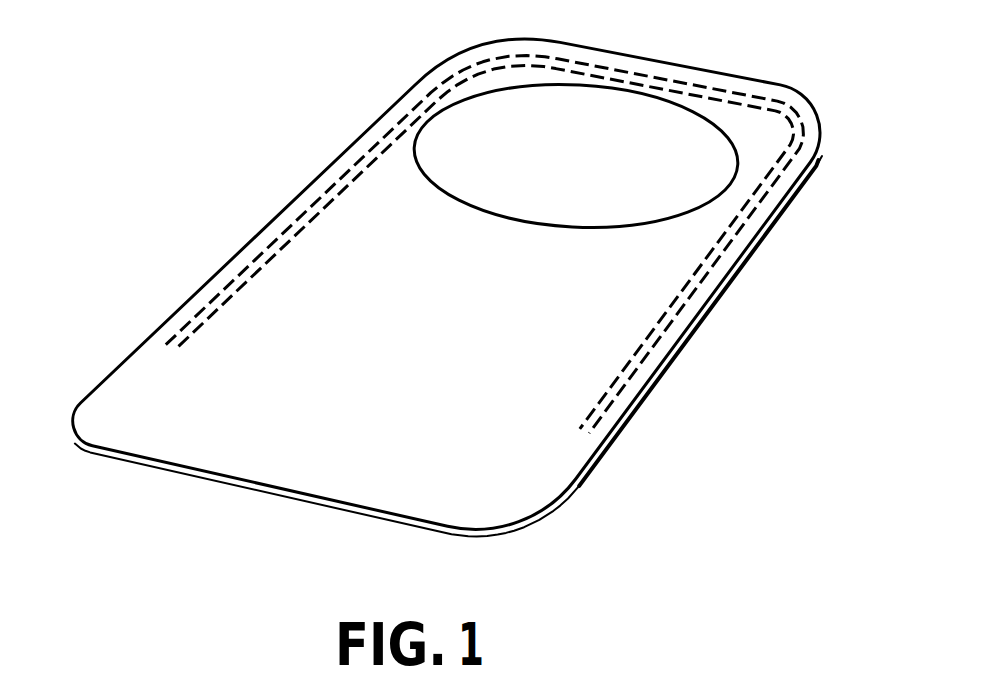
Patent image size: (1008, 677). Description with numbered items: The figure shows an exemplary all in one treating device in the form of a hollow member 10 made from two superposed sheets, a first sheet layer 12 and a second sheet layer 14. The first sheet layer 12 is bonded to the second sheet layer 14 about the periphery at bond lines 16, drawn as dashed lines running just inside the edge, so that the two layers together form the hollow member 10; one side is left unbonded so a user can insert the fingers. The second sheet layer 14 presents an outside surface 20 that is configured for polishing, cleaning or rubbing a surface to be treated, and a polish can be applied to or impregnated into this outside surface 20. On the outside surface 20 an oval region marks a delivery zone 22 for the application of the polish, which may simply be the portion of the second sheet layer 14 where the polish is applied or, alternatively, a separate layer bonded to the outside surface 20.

The hollow member 10 is at (451, 282).
The first sheet layer 12 is at (668, 395).
The second sheet layer 14 is at (377, 217).
The bond lines 16 is at (703, 273).
The outside surface 20 is at (408, 377).
The delivery zone 22 is at (623, 103).